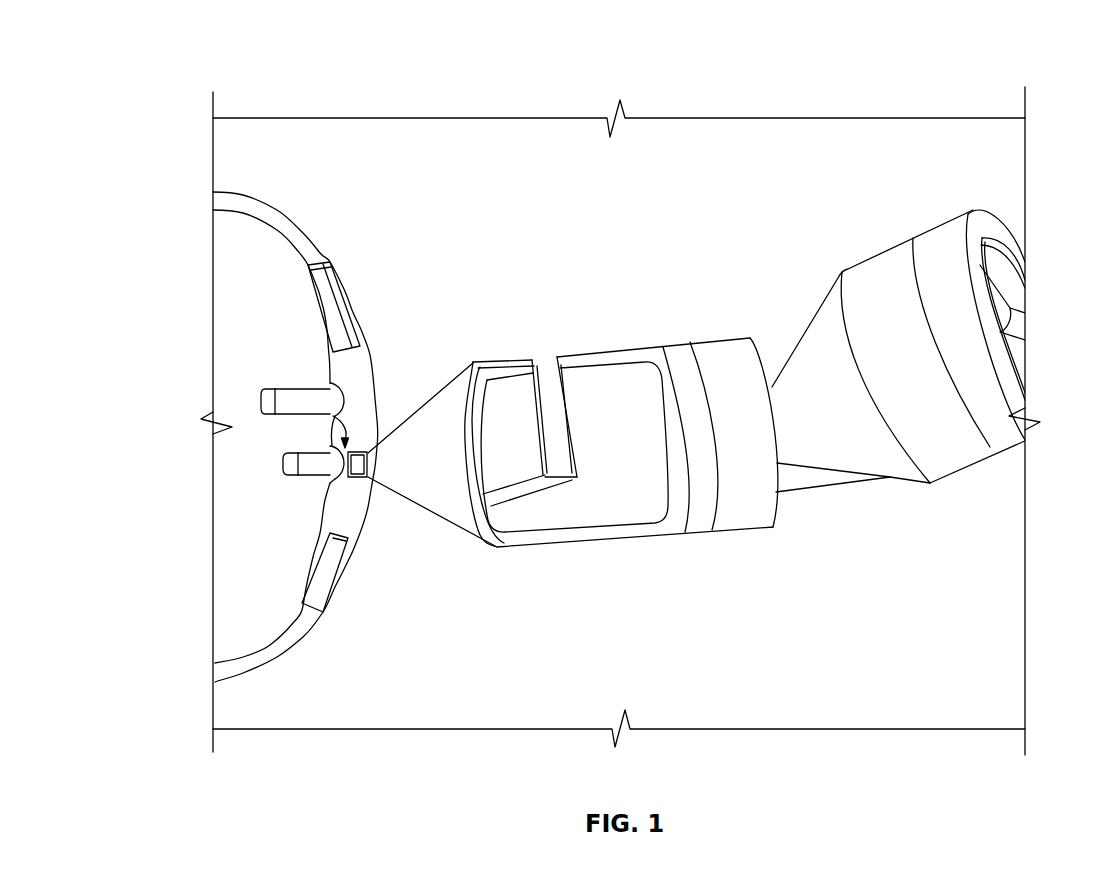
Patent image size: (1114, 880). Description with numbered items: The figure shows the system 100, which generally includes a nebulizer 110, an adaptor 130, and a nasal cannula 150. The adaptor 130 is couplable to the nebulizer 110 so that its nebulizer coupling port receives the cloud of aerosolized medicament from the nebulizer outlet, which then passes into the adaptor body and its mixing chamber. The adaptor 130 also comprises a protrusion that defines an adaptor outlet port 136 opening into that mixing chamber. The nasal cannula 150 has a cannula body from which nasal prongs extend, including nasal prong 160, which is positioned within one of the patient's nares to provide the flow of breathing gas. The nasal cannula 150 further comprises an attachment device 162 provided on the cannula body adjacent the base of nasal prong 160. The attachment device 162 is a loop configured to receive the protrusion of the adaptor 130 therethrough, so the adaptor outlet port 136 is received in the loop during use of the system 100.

The system 100 is at (229, 49).
The nebulizer 110 is at (806, 330).
The adaptor 130 is at (492, 362).
The adaptor outlet port 136 is at (262, 397).
The nasal cannula 150 is at (343, 272).
The nasal prong 160 is at (285, 481).
The attachment device 162 is at (362, 484).